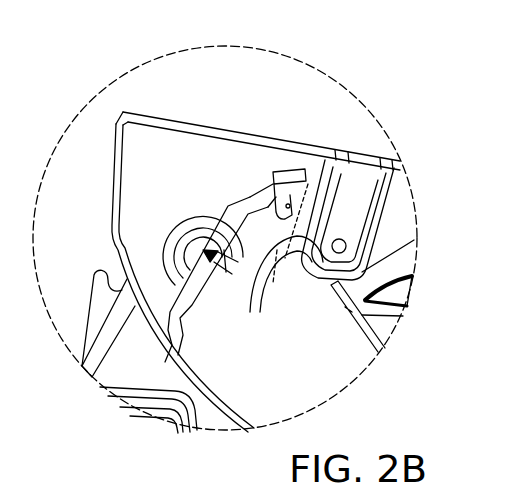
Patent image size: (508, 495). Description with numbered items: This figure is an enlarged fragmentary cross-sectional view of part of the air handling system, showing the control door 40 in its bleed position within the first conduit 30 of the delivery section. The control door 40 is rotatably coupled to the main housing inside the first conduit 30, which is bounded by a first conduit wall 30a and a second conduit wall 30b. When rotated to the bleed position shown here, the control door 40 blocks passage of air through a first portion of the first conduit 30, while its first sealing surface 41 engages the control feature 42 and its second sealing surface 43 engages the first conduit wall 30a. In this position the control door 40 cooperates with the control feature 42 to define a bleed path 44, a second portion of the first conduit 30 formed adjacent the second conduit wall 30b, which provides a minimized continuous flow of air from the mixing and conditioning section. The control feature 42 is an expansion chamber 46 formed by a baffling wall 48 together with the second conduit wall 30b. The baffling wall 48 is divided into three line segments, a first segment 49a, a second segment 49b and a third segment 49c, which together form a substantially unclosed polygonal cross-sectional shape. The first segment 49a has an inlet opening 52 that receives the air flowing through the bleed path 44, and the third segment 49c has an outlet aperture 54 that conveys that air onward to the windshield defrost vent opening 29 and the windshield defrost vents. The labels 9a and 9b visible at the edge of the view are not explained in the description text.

The windshield defrost vent opening 29 is at (150, 113).
The first conduit 30 is at (110, 152).
The first conduit wall 30a is at (118, 248).
The second conduit wall 30b is at (300, 247).
The panel wall portion b 9b is at (11, 215).
The panel wall portion a 9a is at (11, 237).
The control door 40 is at (236, 303).
The first sealing surface 41 is at (278, 188).
The control feature 42 is at (296, 158).
The second sealing surface 43 is at (195, 336).
The bleed path 44 is at (278, 248).
The expansion chamber 46 is at (252, 197).
The baffling wall 48 is at (256, 158).
The first segment 49a is at (280, 190).
The second segment 49b is at (272, 181).
The third segment 49c is at (272, 172).
The inlet opening 52 is at (262, 300).
The outlet aperture 54 is at (322, 172).